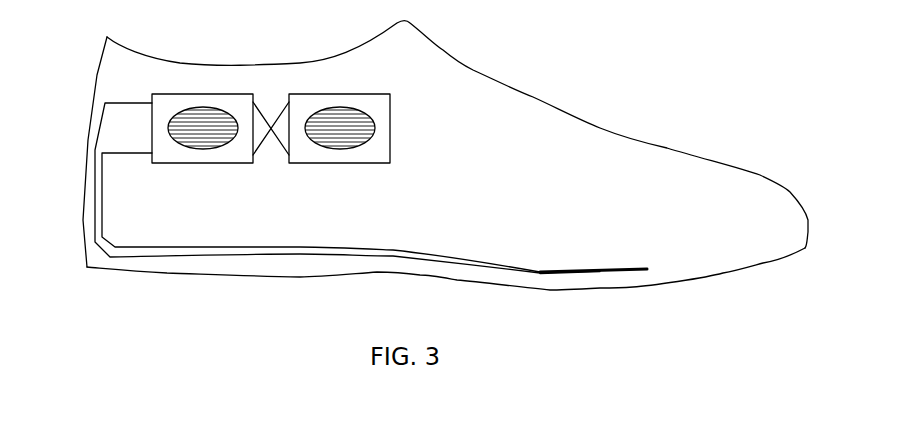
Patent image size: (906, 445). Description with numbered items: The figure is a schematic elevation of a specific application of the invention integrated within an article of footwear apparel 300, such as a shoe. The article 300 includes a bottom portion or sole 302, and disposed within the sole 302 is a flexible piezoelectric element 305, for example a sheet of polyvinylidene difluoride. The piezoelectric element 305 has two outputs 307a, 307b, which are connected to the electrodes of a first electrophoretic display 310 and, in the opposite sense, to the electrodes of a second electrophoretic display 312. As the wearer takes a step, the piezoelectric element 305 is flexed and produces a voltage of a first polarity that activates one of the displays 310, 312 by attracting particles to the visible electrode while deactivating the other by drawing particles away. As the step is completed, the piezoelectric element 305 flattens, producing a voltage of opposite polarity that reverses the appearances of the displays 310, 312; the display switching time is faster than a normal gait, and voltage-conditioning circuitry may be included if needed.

The article of footwear apparel 300 is at (607, 72).
The sole 302 is at (673, 283).
The flexible piezoelectric element 305 is at (596, 273).
The first output 307a is at (118, 102).
The second output 307b is at (128, 152).
The first electrophoretic display 310 is at (210, 115).
The second electrophoretic display 312 is at (363, 127).